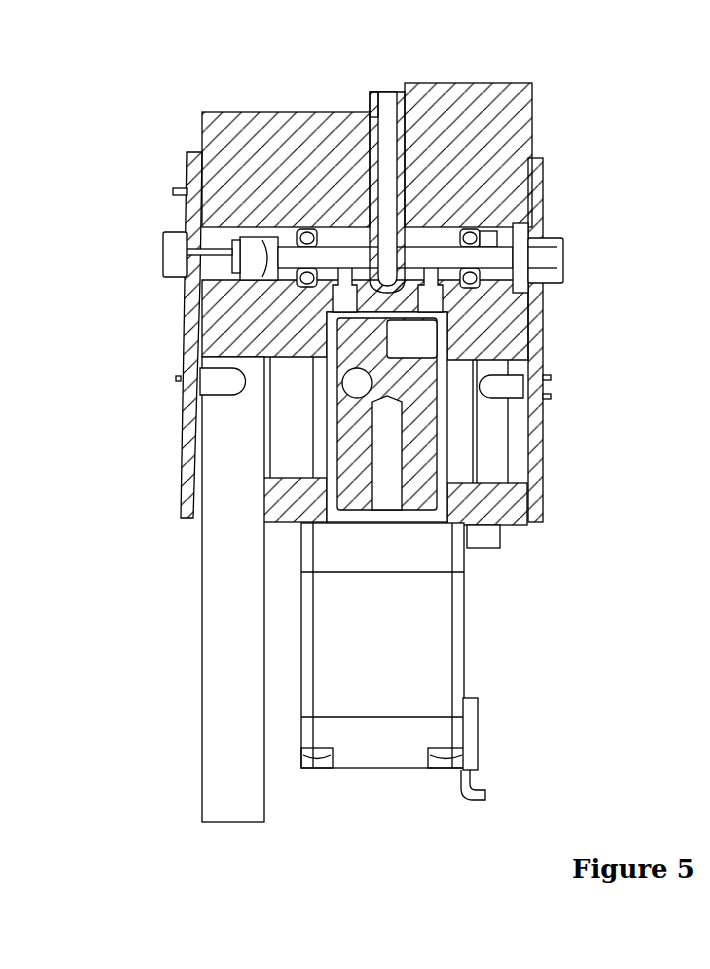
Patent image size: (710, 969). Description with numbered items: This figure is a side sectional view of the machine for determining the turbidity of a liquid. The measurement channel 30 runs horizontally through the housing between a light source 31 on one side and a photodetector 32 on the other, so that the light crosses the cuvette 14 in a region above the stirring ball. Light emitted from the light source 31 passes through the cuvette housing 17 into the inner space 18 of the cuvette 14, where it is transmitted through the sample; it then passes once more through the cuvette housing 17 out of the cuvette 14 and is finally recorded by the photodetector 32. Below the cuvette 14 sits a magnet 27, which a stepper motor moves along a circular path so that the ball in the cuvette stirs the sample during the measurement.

The cuvette 14 is at (357, 155).
The cuvette housing 17 is at (370, 110).
The inner space 18 is at (390, 189).
The magnet 27 is at (417, 345).
The measurement channel 30 is at (348, 261).
The light source 31 is at (228, 263).
The photodetector 32 is at (557, 257).